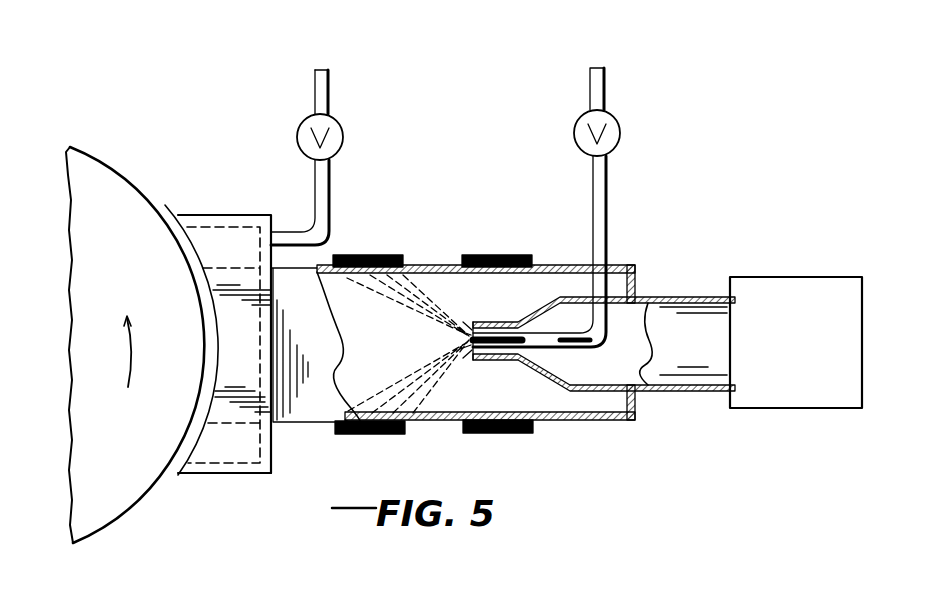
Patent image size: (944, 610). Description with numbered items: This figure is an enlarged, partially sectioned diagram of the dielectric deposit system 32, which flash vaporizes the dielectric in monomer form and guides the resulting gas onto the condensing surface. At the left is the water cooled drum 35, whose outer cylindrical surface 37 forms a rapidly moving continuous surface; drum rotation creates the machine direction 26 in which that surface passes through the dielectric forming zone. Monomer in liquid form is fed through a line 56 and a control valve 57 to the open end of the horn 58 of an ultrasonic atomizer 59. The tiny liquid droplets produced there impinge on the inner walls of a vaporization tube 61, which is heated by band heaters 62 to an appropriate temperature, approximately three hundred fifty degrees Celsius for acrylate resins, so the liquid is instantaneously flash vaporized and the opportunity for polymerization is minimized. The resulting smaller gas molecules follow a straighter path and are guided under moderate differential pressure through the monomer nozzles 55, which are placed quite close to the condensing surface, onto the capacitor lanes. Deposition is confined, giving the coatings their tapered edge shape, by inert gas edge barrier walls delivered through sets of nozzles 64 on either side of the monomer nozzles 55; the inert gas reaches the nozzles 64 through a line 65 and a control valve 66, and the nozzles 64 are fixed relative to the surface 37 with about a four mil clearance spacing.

The machine direction 26 is at (131, 363).
The dielectric deposit system 32 is at (707, 212).
The water cooled drum 35 is at (128, 505).
The outer cylindrical surface 37 is at (160, 202).
The nozzles 55 is at (234, 266).
The line 56 is at (617, 138).
The control valve 57 is at (603, 95).
The horn 58 is at (492, 320).
The ultrasonic atomizer 59 is at (805, 350).
The vaporization tube 61 is at (588, 421).
The band heaters 62 is at (373, 255).
The nozzles 64 is at (232, 452).
The line 65 is at (330, 97).
The control valve 66 is at (343, 137).